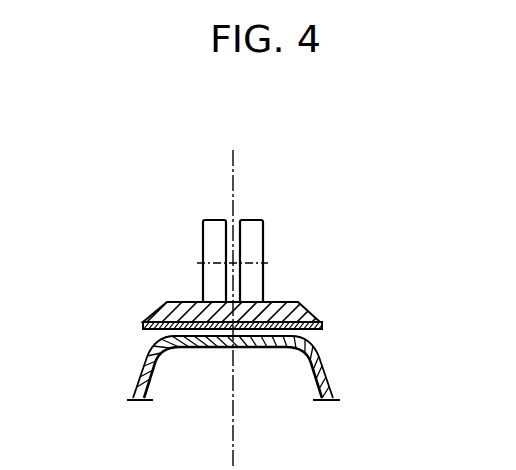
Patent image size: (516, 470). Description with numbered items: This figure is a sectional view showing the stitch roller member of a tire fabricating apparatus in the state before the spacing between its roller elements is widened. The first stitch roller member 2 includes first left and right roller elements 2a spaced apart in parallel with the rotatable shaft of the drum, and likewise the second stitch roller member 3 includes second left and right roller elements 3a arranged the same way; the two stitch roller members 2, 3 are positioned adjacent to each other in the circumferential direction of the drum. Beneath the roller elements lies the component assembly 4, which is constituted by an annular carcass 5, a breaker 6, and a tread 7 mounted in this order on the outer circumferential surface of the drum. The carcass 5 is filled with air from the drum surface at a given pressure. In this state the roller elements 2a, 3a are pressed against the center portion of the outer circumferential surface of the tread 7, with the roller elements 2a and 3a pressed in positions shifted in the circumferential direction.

The first stitch roller member 2 is at (214, 209).
The second stitch roller member 3 is at (225, 221).
The first left and right roller elements 2a is at (213, 237).
The second left and right roller elements 3a is at (257, 237).
The component assembly 4 is at (415, 242).
The carcass 5 is at (327, 374).
The breaker 6 is at (321, 327).
The tread 7 is at (298, 312).